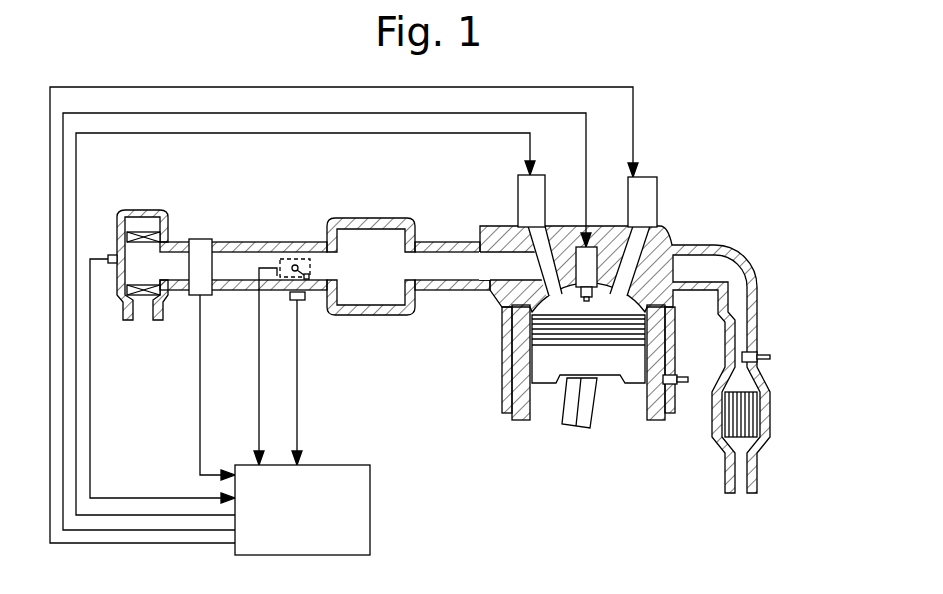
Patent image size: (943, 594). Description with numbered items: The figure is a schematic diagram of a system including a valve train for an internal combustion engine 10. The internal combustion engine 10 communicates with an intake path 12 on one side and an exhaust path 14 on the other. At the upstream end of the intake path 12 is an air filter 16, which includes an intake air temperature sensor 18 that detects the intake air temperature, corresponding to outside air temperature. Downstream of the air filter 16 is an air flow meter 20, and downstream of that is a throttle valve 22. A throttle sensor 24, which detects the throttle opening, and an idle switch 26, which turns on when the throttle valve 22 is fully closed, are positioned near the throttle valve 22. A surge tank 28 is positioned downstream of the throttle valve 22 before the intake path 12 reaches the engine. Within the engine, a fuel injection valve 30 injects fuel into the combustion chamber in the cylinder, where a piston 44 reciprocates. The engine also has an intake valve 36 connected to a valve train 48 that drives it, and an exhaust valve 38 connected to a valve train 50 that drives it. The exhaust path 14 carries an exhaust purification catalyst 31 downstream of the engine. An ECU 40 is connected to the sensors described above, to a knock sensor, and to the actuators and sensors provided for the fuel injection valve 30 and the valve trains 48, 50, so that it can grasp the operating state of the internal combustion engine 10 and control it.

The internal combustion engine 10 is at (488, 370).
The intake path 12 is at (322, 240).
The exhaust path 14 is at (764, 272).
The air filter 16 is at (137, 208).
The intake air temperature sensor 18 is at (110, 255).
The air flow meter 20 is at (200, 239).
The throttle valve 22 is at (295, 265).
The throttle sensor 24 is at (276, 285).
The idle switch 26 is at (300, 301).
The surge tank 28 is at (378, 218).
The fuel injection valve 30 is at (590, 246).
The catalyst 31 is at (772, 402).
The intake valve 36 is at (547, 230).
The exhaust valve 38 is at (672, 245).
The ECU 40 is at (348, 465).
The piston 44 is at (625, 378).
The valve train 48 is at (518, 182).
The valve train 50 is at (645, 175).